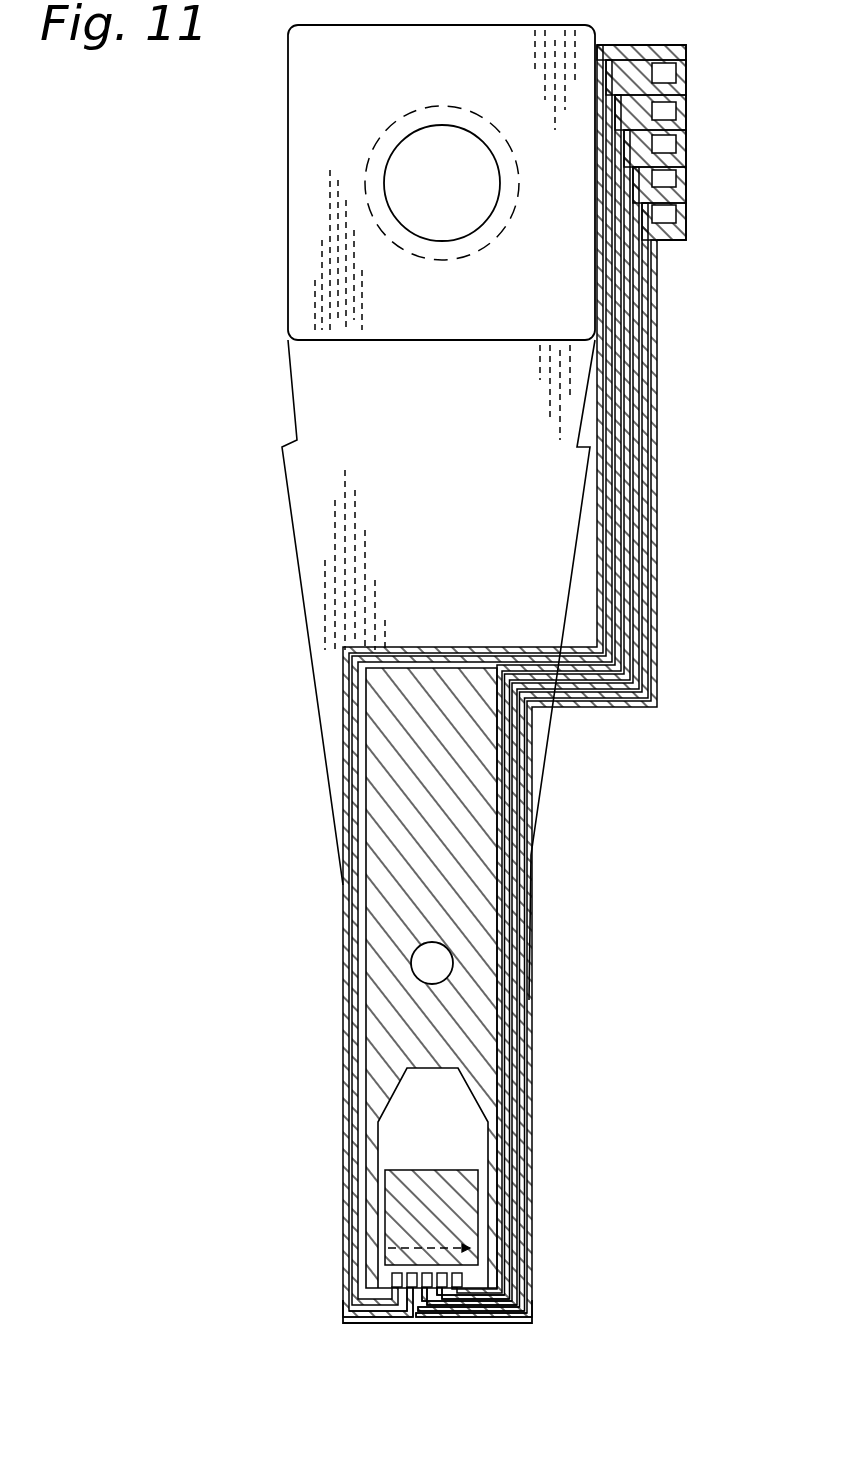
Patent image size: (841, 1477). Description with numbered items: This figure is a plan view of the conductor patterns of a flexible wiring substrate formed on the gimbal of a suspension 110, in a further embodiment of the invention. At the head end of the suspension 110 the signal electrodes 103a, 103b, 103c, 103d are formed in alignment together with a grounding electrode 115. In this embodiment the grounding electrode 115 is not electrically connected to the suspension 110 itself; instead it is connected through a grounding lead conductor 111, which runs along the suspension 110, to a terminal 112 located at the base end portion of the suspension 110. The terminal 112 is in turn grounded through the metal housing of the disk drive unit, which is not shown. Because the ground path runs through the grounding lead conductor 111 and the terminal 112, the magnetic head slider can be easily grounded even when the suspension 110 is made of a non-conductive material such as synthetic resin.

The suspension 110 is at (298, 358).
The grounding lead conductor 111 is at (372, 903).
The terminal 112 is at (663, 105).
The grounding electrode 115 is at (403, 1290).
The signal electrode 103a is at (400, 1325).
The signal electrode 103b is at (433, 1318).
The signal electrode 103c is at (477, 1330).
The signal electrode 103d is at (500, 1295).